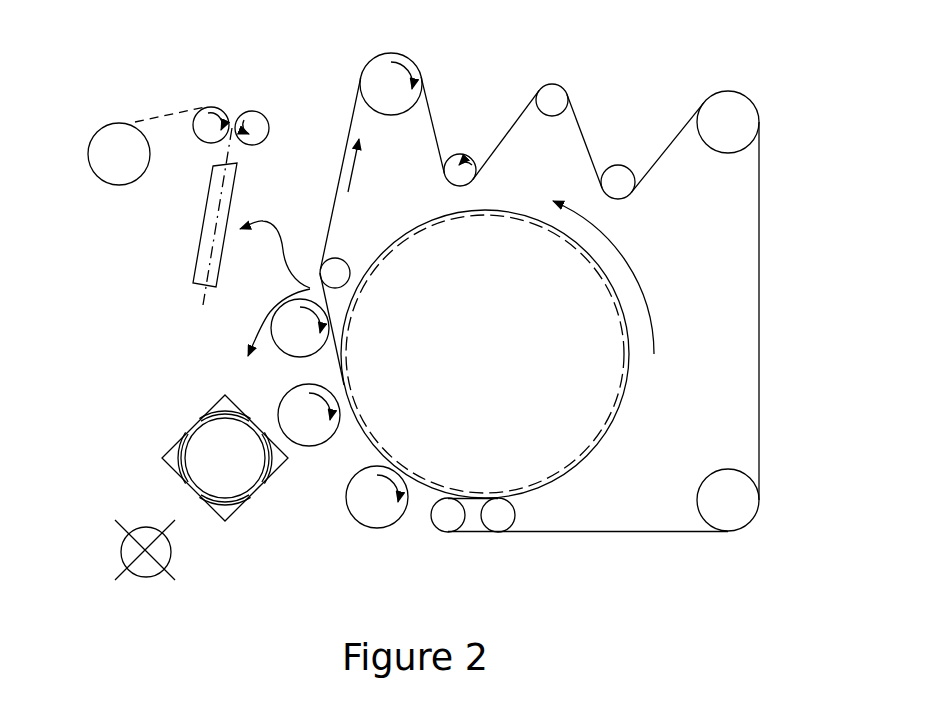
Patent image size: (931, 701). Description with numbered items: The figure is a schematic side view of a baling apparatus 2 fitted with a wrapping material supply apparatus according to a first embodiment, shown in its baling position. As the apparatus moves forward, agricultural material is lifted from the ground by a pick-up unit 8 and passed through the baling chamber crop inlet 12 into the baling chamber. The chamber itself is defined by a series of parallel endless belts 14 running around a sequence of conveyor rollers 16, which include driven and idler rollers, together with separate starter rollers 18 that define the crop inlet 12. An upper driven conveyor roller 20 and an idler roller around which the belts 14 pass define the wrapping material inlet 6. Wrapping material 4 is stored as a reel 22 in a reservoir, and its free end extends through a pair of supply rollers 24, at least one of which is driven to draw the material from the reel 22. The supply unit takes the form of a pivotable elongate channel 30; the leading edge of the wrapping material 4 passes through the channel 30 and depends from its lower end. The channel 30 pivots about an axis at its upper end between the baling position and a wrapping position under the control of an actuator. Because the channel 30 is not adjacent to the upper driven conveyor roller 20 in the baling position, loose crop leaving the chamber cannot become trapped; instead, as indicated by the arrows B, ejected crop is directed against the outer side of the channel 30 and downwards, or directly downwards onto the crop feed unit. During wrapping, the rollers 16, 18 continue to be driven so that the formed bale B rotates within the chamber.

The baling apparatus 2 is at (606, 63).
The wrapping material 4 is at (200, 300).
The wrapping material inlet 6 is at (330, 297).
The pick-up unit 8 is at (122, 550).
The baling chamber crop inlet 12 is at (207, 438).
The parallel endless belts 14 is at (759, 300).
The conveyor rollers 16 is at (410, 60).
The starter rollers 18 is at (338, 427).
The upper driven conveyor roller 20 is at (318, 355).
The reel 22 is at (98, 178).
The pair of supply rollers 24 is at (257, 110).
The pivotable elongate channel 30 is at (198, 243).